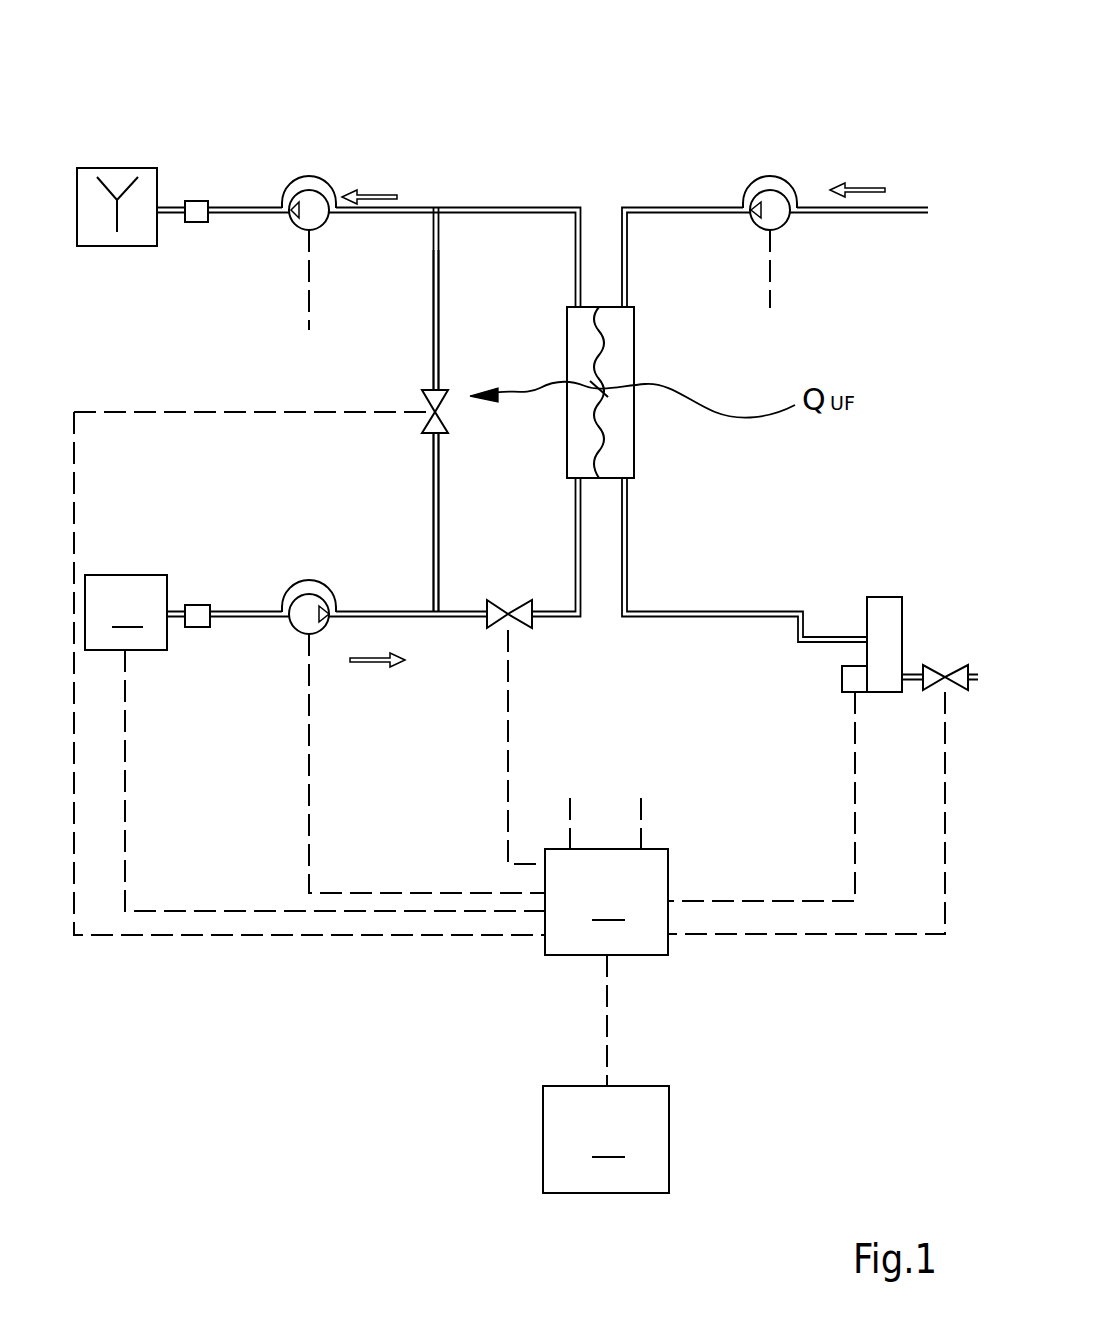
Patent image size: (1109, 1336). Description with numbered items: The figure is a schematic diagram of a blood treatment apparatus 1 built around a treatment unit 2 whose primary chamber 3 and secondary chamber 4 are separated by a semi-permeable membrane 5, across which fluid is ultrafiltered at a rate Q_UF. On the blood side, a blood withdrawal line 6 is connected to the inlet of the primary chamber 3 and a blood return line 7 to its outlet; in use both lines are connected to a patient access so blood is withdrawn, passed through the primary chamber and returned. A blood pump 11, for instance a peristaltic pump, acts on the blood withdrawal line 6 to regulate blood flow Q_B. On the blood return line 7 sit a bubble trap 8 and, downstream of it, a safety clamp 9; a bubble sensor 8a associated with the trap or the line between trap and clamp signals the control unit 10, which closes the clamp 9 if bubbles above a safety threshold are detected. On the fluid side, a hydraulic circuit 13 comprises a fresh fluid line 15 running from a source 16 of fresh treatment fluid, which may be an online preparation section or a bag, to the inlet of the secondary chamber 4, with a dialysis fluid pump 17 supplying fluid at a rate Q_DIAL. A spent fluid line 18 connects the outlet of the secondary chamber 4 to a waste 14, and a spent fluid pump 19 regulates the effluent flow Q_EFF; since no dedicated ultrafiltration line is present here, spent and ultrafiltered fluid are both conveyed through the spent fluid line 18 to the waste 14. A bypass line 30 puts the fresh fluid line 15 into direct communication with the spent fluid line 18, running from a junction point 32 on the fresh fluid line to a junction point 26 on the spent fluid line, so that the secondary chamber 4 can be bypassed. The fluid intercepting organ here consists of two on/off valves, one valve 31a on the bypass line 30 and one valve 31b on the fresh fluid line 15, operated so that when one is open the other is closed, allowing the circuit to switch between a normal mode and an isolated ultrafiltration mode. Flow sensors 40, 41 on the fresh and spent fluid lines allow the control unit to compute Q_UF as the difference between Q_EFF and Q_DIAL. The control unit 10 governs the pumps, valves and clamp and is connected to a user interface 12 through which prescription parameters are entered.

The apparatus 1 is at (768, 31).
The treatment unit 2 is at (650, 468).
The primary chamber 3 is at (618, 352).
The secondary chamber 4 is at (575, 413).
The semi-permeable membrane 5 is at (575, 356).
The blood withdrawal line 6 is at (866, 214).
The blood return line 7 is at (790, 610).
The bubble trap 8 is at (884, 597).
The bubble sensor 8a is at (855, 675).
The safety clamp 9 is at (945, 672).
The control unit 10 is at (371, 749).
The blood pump 11 is at (778, 190).
The user interface 12 is at (606, 1139).
The hydraulic circuit 13 is at (193, 680).
The waste 14 is at (122, 168).
The fresh fluid line 15 is at (397, 610).
The source of fresh treatment fluid 16 is at (315, 743).
The dialysis fluid pump 17 is at (309, 595).
The spent fluid line 18 is at (413, 207).
The spent fluid pump 19 is at (309, 190).
The junction point 26 is at (438, 207).
The bypass line 30 is at (433, 306).
The valve 31a is at (422, 392).
The valve 31b is at (532, 625).
The junction point 32 is at (436, 620).
The flow sensor 40 is at (208, 605).
The flow sensor 41 is at (208, 200).